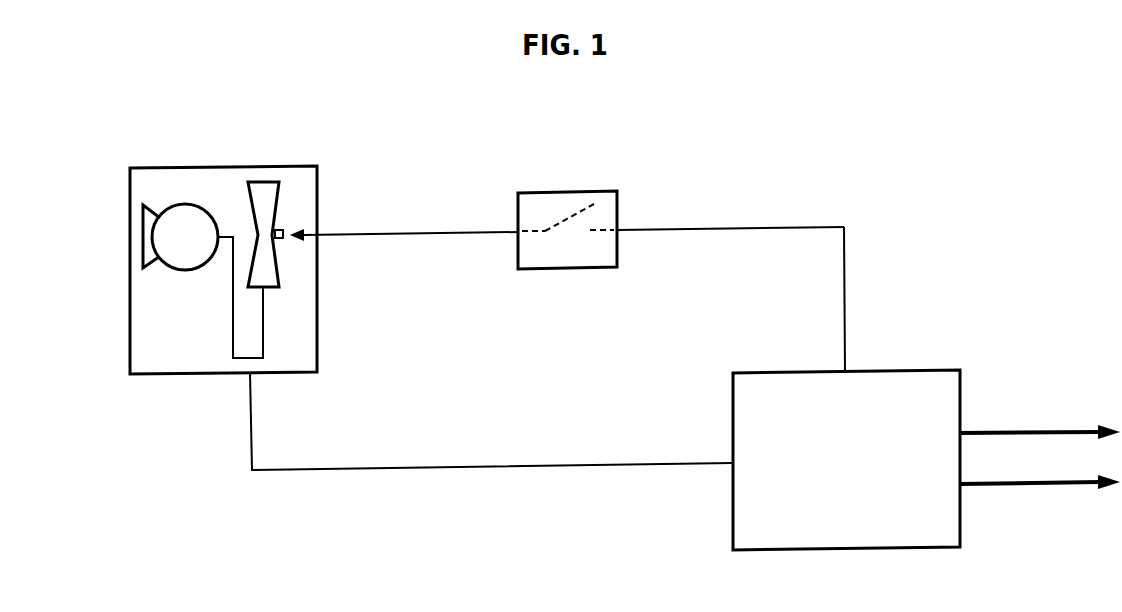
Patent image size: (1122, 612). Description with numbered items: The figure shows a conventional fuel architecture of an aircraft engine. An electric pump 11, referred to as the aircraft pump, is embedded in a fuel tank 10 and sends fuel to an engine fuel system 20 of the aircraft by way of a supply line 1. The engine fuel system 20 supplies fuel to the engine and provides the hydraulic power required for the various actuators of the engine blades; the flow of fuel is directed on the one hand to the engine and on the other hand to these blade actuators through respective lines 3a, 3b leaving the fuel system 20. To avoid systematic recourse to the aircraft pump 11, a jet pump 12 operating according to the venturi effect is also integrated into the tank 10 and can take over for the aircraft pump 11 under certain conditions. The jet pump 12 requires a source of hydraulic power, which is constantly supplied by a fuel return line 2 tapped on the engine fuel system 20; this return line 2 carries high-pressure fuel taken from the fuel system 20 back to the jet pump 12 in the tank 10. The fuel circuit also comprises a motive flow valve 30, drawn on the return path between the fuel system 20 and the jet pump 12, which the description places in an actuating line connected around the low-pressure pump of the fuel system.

The supply line 1 is at (572, 464).
The fuel return line 2 is at (720, 226).
The line 3a is at (1030, 430).
The line 3b is at (1030, 487).
The fuel tank 10 is at (127, 272).
The electric pump 11 is at (186, 220).
The jet pump 12 is at (264, 202).
The engine fuel system 20 is at (893, 366).
The motive flow valve 30 is at (566, 186).